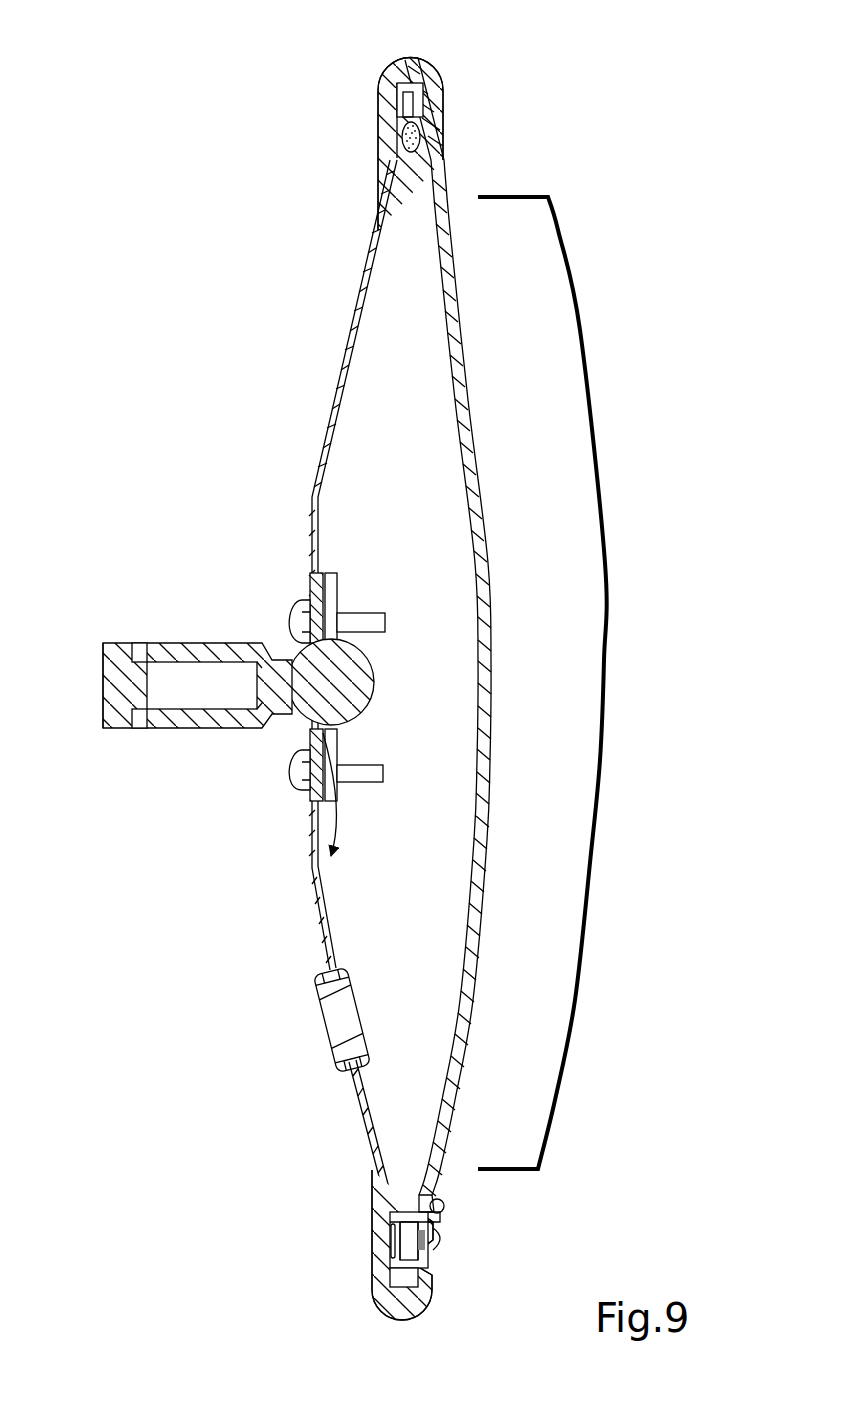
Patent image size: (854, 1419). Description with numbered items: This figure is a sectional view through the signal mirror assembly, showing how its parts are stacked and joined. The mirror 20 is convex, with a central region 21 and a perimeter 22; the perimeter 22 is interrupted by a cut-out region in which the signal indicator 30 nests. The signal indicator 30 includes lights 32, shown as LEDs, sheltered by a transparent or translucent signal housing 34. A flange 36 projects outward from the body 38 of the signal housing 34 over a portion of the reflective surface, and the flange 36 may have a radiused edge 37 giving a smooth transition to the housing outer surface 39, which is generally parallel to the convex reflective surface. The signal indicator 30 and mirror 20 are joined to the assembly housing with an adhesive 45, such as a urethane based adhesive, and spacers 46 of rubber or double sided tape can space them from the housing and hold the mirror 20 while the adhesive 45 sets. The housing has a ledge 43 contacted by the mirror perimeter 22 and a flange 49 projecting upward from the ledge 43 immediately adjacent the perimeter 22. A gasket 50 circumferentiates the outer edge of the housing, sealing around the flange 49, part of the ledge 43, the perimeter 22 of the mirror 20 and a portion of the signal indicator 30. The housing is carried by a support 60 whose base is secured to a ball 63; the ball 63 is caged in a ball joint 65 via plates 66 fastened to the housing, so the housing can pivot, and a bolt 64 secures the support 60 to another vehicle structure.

The mirror 20 is at (488, 782).
The central region 21 is at (604, 658).
The perimeter 22 is at (422, 84).
The signal indicator 30 is at (446, 1250).
The lights 32 is at (413, 1242).
The signal housing 34 is at (432, 1270).
The flange 36 is at (445, 1205).
The radiused edge 37 is at (437, 1197).
The body 38 is at (442, 1234).
The housing outer surface 39 is at (440, 1222).
The ledge 43 is at (397, 132).
The adhesive 45 is at (420, 137).
The spacers 46 is at (408, 110).
The flange 49 is at (407, 78).
The gasket 50 is at (430, 74).
The support 60 is at (190, 650).
The ball 63 is at (376, 724).
The bolt 64 is at (103, 683).
The ball joint 65 is at (330, 640).
The plates 66 is at (334, 807).